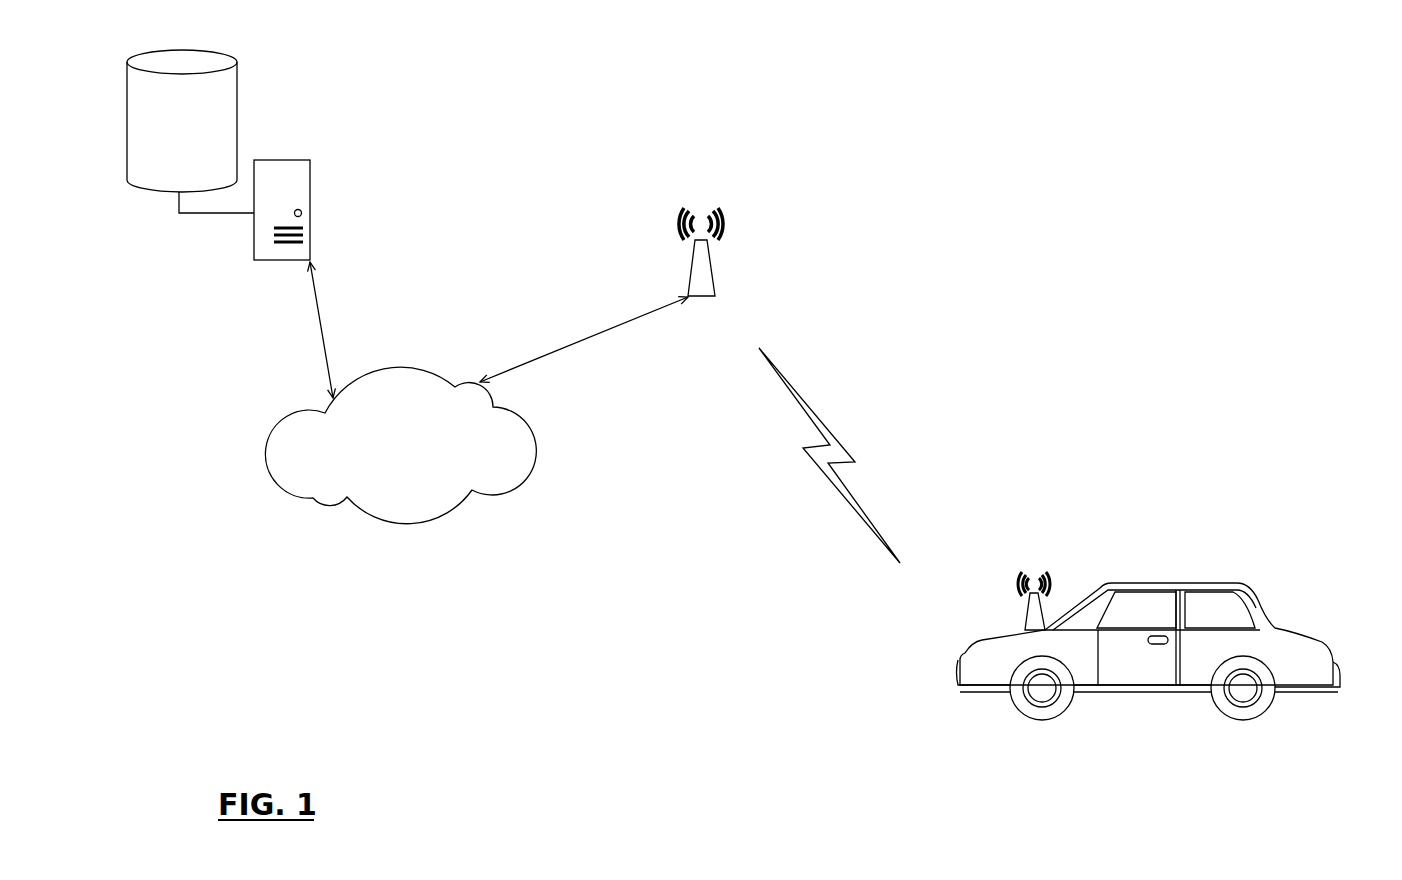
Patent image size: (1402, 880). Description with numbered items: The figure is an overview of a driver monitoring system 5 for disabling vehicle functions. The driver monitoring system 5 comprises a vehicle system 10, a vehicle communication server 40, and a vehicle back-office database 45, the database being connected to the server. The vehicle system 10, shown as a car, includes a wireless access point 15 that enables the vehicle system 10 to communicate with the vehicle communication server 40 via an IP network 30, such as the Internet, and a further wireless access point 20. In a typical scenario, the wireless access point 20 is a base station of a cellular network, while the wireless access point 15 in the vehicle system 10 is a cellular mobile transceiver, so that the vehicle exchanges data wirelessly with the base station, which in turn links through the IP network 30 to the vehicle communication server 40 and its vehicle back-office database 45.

The driver monitoring system 5 is at (1217, 137).
The vehicle system 10 is at (1173, 583).
The wireless access point 15 is at (1025, 622).
The wireless access point 20 is at (718, 293).
The IP network 30 is at (417, 457).
The vehicle communication server 40 is at (287, 160).
The vehicle back-office database 45 is at (194, 147).